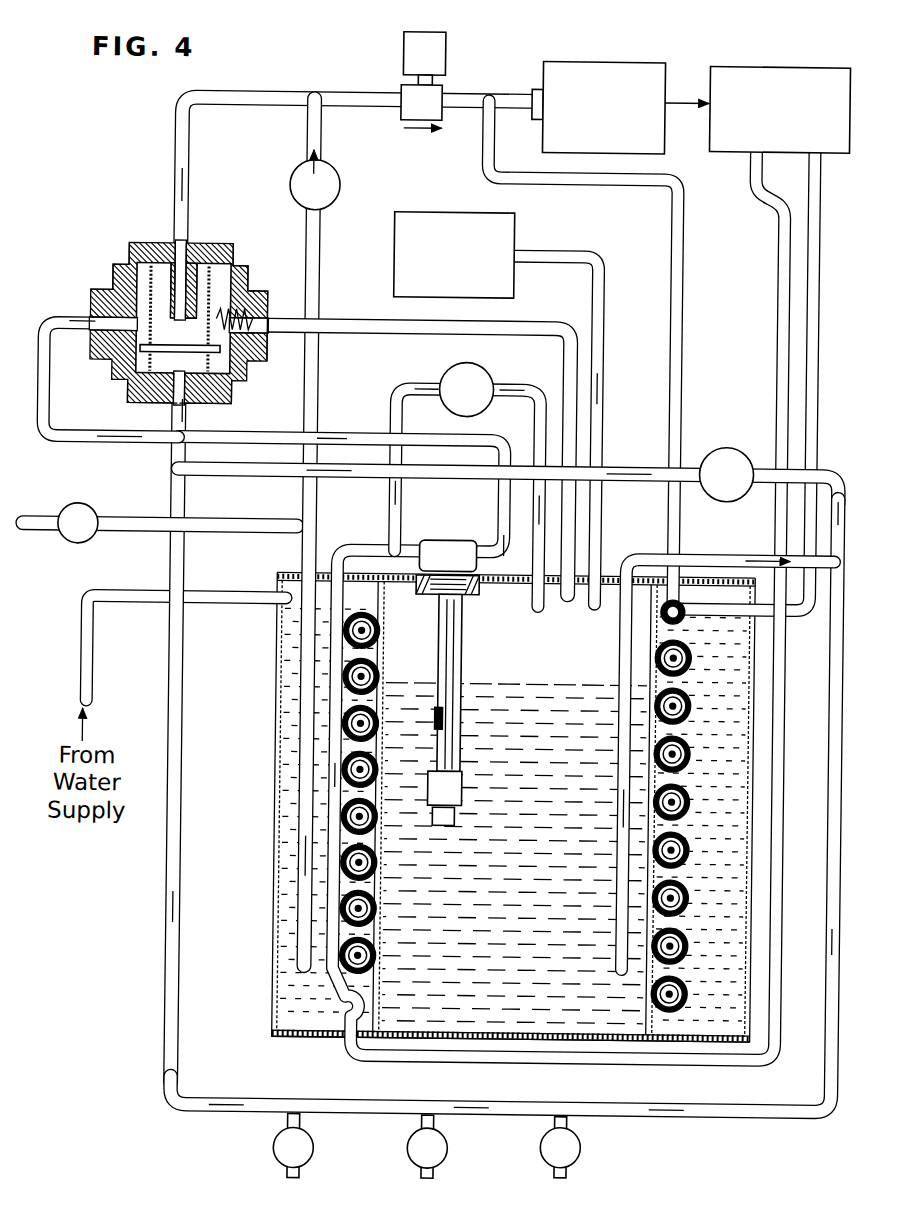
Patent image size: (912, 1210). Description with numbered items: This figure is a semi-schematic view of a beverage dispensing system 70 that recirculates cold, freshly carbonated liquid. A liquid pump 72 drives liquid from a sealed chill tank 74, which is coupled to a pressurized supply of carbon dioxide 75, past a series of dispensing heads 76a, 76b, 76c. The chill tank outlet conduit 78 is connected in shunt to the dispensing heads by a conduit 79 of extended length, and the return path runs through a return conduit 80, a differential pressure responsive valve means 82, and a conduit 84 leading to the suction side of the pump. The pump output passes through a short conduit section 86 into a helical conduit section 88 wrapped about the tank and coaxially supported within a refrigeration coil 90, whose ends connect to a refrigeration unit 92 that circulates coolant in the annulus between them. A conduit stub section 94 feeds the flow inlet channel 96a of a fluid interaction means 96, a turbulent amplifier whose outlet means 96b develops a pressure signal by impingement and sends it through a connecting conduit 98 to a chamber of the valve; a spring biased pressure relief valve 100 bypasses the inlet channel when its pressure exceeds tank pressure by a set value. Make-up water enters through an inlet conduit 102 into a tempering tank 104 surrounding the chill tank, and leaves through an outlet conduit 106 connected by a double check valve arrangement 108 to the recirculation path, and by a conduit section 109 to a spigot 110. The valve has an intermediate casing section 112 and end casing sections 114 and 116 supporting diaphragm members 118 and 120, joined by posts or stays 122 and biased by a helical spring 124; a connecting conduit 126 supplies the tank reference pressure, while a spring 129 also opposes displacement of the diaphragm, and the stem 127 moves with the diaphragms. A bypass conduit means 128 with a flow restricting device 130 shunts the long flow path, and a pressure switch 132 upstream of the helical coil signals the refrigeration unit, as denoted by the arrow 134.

The beverage dispensing system 70 is at (554, 682).
The liquid pump 72 is at (401, 45).
The chill tank 74 is at (658, 870).
The supply of carbon dioxide 75 is at (554, 430).
The dispensing head 76a is at (278, 1151).
The dispensing head 76b is at (412, 1150).
The dispensing head 76c is at (545, 1149).
The chill tank outlet conduit 78 is at (621, 656).
The conduit of extended length 79 is at (830, 936).
The return conduit 80 is at (170, 461).
The differential pressure responsive valve means 82 is at (236, 301).
The conduit 84 is at (300, 94).
The short conduit section 86 is at (570, 185).
The helical conduit section 88 is at (744, 381).
The refrigeration coil 90 is at (692, 753).
The refrigeration unit 92 is at (778, 64).
The conduit stub section 94 is at (330, 642).
The fluid interaction means 96 is at (459, 683).
The flow inlet channel 96a is at (440, 661).
The fluid amplifier outlet means 96b is at (441, 720).
The connecting conduit 98 is at (284, 434).
The pressure relief valve 100 is at (450, 372).
The inlet conduit 102 is at (80, 668).
The tempering tank 104 is at (756, 822).
The outlet conduit 106 is at (302, 746).
The double check valve arrangement 108 is at (294, 173).
The conduit section 109 is at (126, 537).
The spigot 110 is at (68, 508).
The intermediate casing section 112 is at (200, 247).
The end casing section 114 is at (110, 292).
The end casing section 116 is at (238, 269).
The diaphragm member 118 is at (137, 367).
The diaphragm member 120 is at (250, 292).
The vertical posts or stays 122 is at (197, 404).
The helical spring 124 is at (248, 353).
The connecting conduit 126 is at (353, 321).
The valve stem 127 is at (167, 404).
The bypass conduit means 128 is at (253, 480).
The spring 129 is at (87, 305).
The flow restricting device 130 is at (728, 446).
The pressure switch 132 is at (594, 61).
The arrow 134 is at (681, 96).